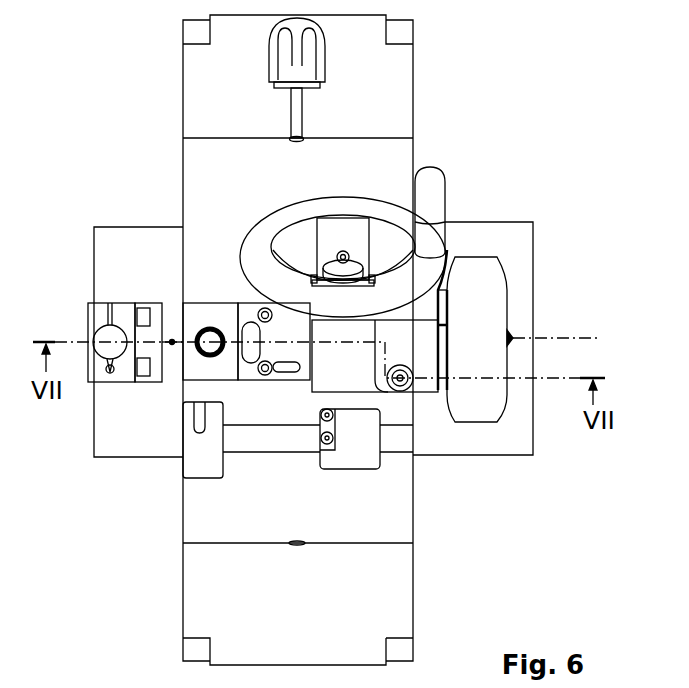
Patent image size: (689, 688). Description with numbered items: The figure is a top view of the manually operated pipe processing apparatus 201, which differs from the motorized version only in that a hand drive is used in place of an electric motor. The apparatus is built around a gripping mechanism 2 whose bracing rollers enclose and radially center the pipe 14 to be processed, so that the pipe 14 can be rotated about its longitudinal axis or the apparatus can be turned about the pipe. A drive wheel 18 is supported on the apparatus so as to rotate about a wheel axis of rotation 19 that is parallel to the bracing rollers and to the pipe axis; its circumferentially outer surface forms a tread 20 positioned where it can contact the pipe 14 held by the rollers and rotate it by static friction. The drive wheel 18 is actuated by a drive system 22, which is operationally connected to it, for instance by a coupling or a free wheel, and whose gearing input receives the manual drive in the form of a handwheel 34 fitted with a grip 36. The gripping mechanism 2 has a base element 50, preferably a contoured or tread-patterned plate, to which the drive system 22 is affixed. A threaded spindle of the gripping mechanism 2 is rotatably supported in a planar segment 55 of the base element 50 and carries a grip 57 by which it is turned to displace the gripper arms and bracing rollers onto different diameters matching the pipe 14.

The gripping mechanism 2 is at (473, 561).
The pipe 14 is at (118, 444).
The drive wheel 18 is at (488, 310).
The wheel axis of rotation 19 is at (592, 336).
The tread 20 is at (488, 255).
The drive system 22 is at (465, 191).
The handwheel 34 is at (375, 207).
The grip 36 is at (428, 185).
The base element 50 is at (200, 106).
The planar segment 55 is at (198, 190).
The grip 57 is at (298, 48).
The pipe processing apparatus 201 is at (588, 100).